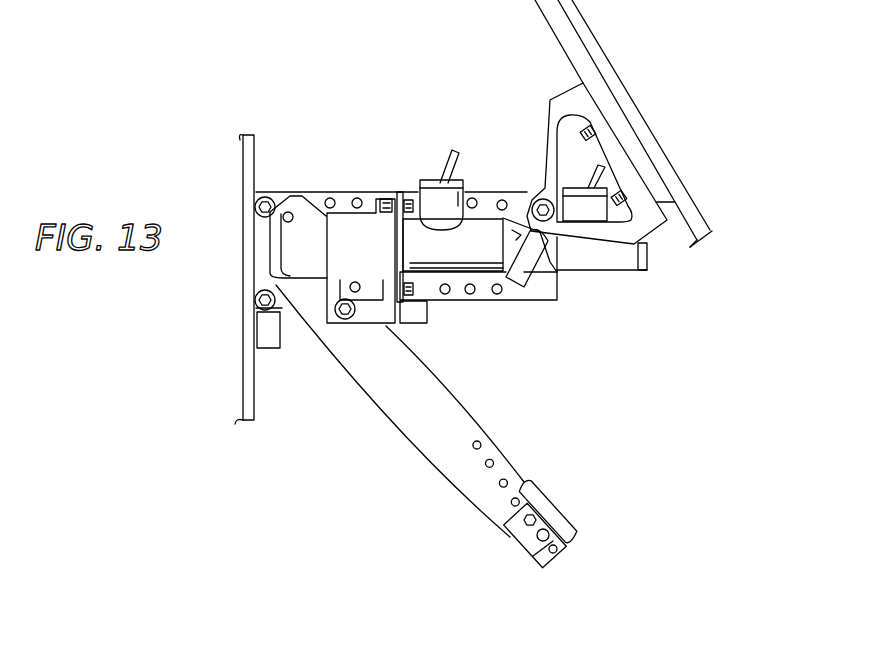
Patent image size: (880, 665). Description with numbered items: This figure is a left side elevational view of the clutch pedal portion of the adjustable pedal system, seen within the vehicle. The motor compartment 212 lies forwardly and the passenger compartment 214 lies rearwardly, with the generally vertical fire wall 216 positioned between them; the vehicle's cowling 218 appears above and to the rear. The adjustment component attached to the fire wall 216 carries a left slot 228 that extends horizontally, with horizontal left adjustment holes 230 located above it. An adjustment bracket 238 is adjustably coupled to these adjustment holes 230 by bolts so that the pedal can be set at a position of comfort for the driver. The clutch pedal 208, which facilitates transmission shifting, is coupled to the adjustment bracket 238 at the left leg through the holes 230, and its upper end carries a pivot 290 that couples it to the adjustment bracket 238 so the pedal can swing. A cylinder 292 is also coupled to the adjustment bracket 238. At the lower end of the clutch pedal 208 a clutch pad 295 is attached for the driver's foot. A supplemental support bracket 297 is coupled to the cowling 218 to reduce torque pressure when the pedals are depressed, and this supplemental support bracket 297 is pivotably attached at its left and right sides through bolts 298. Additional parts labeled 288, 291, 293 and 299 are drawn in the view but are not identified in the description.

The clutch pedal 208 is at (390, 419).
The motor compartment 212 is at (150, 360).
The passenger compartment 214 is at (782, 60).
The fire wall 216 is at (243, 172).
The cowling 218 is at (636, 107).
The left slot 228 is at (558, 277).
The left adjustment holes 230 is at (493, 300).
The adjustment bracket 238 is at (367, 227).
The bracket 288 is at (304, 252).
The pivot 290 is at (348, 321).
The adjustment holes 291 is at (481, 446).
The cylinder 292 is at (457, 302).
The end block 293 is at (560, 560).
The clutch pad 295 is at (563, 503).
The supplemental support bracket 297 is at (570, 43).
The bolts 298 is at (536, 196).
The fastener 299 is at (513, 537).